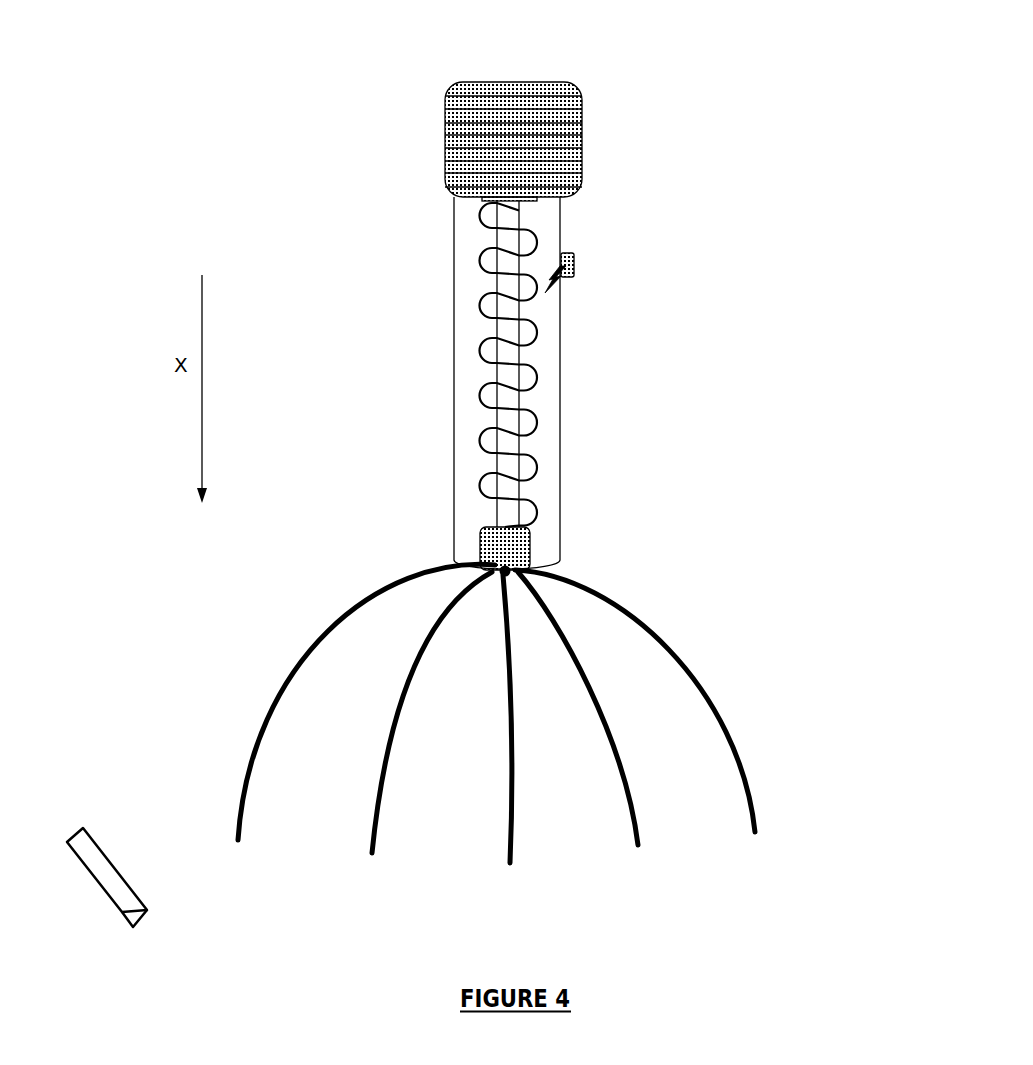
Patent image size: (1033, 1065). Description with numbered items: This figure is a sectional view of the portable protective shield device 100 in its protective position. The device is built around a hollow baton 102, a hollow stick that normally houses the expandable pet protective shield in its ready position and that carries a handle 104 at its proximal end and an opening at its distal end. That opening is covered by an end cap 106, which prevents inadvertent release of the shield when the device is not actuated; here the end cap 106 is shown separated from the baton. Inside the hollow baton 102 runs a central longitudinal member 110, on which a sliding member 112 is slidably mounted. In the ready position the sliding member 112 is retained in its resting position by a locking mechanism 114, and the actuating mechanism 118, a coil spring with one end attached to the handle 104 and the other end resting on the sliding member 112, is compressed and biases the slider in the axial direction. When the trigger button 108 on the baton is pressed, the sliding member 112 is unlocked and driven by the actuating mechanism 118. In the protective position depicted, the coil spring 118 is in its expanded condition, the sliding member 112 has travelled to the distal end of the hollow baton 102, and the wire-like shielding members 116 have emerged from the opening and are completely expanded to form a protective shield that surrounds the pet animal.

The portable protective shield device 100 is at (311, 97).
The hollow baton 102 is at (454, 277).
The handle 104 is at (582, 125).
The end cap 106 is at (112, 903).
The trigger button 108 is at (575, 266).
The central longitudinal member 110 is at (512, 444).
The sliding member 112 is at (480, 550).
The locking mechanism 114 is at (560, 297).
The shielding member 116 is at (715, 698).
The actuating mechanism 118 is at (478, 400).